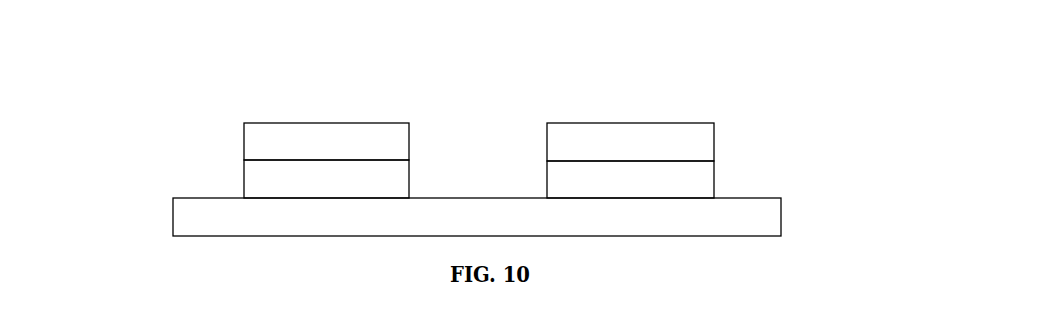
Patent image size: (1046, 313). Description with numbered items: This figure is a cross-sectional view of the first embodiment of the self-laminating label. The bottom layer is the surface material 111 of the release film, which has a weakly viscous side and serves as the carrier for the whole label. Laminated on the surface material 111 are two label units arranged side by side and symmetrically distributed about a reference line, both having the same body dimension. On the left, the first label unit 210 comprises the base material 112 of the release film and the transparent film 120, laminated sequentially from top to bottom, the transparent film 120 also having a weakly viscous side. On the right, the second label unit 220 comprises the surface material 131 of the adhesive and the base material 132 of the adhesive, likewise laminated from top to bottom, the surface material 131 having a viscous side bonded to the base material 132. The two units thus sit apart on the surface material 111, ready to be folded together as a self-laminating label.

The surface material of the release film 111 is at (460, 186).
The base material of the release film 112 is at (230, 133).
The transparent film 120 is at (230, 181).
The first label unit 210 is at (227, 160).
The surface material of the adhesive 131 is at (728, 134).
The base material of the adhesive 132 is at (728, 182).
The second label unit 220 is at (753, 160).